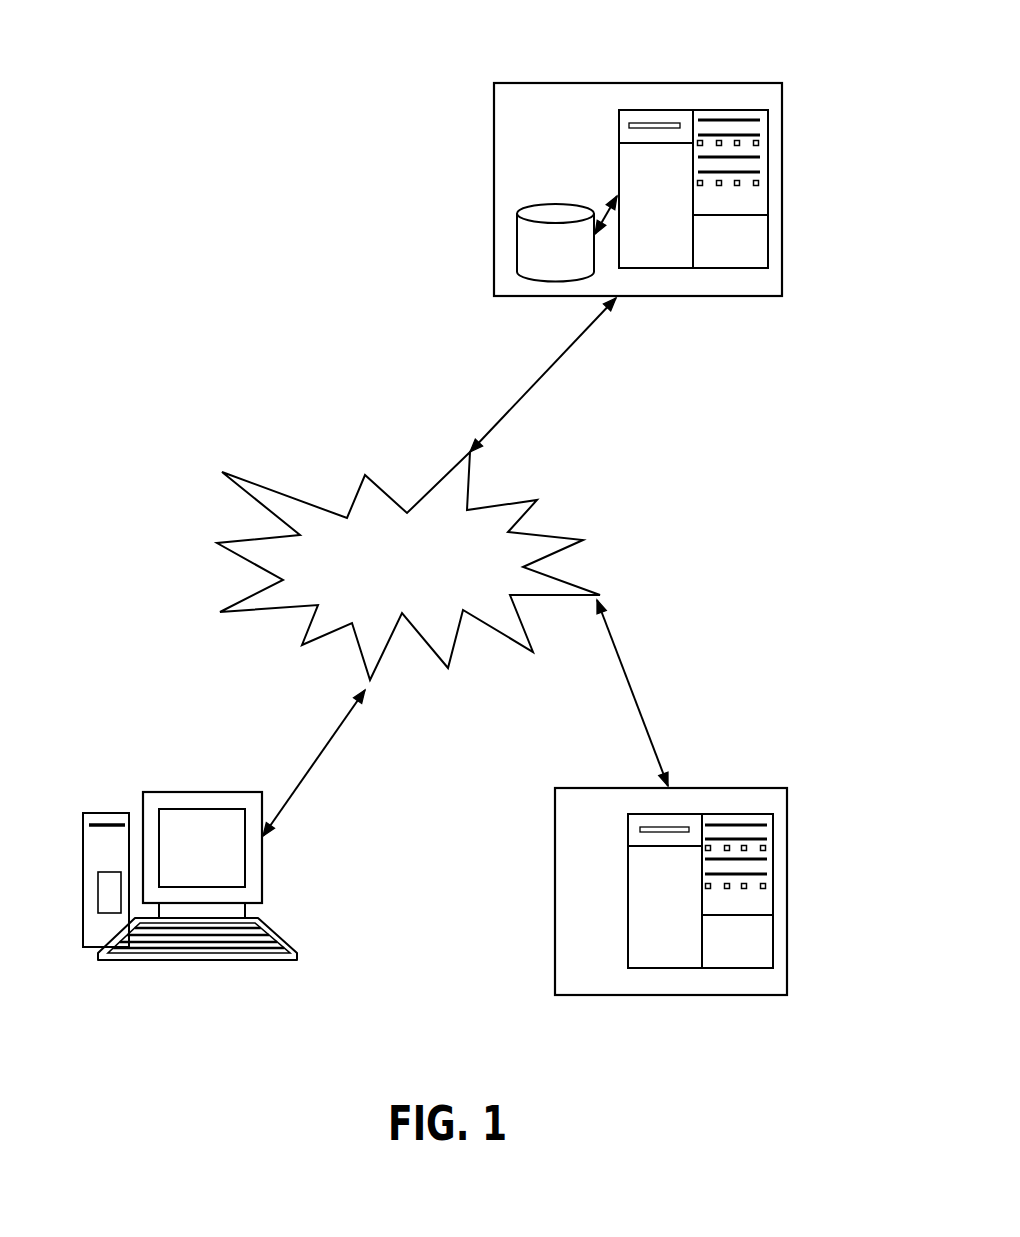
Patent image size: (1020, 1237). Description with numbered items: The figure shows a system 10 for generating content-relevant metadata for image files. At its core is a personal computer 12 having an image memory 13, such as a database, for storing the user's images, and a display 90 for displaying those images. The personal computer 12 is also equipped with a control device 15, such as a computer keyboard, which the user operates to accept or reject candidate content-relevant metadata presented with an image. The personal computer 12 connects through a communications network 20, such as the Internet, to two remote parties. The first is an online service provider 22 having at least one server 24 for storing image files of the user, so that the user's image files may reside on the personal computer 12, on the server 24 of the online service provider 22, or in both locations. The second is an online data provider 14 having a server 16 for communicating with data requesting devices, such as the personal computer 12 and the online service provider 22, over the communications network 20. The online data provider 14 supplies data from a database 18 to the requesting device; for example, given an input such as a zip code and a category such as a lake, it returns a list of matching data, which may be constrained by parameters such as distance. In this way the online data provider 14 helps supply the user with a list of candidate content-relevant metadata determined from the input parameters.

The system 10 is at (243, 190).
The personal computer 12 is at (103, 818).
The image memory 13 is at (108, 893).
The online data provider 14 is at (668, 82).
The control device 15 is at (250, 955).
The server 16 is at (753, 200).
The database 18 is at (532, 247).
The communications network 20 is at (505, 517).
The online service provider 22 is at (708, 787).
The server 24 is at (763, 902).
The display 90 is at (197, 820).